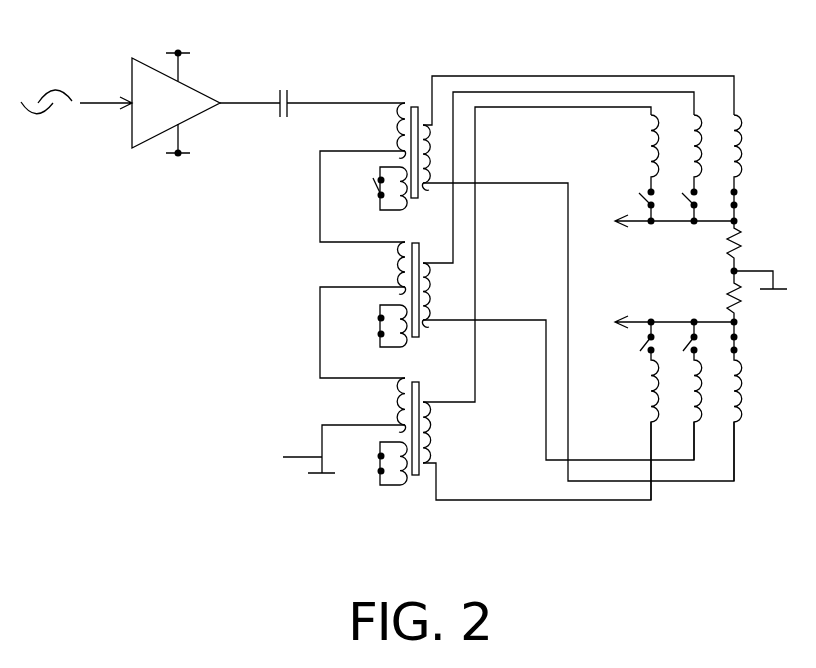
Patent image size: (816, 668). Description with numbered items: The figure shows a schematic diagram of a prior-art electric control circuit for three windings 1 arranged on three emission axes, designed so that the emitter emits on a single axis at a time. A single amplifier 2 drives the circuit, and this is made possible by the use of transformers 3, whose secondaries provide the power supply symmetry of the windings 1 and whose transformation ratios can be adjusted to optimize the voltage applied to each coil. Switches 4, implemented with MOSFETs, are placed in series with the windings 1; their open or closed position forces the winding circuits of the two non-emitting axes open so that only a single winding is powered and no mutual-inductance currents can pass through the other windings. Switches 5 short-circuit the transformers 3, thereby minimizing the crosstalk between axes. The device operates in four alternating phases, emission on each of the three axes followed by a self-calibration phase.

The windings 1 is at (748, 140).
The amplifier 2 is at (192, 108).
The transformers 3 is at (393, 130).
The switches 4 is at (636, 200).
The switches 5 is at (371, 180).